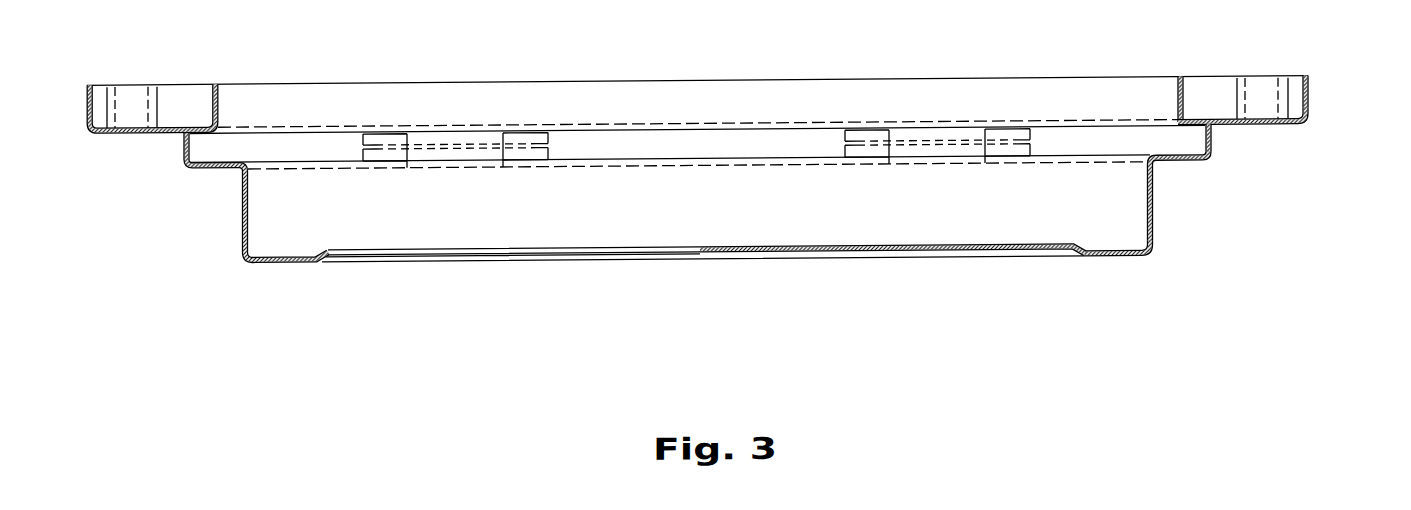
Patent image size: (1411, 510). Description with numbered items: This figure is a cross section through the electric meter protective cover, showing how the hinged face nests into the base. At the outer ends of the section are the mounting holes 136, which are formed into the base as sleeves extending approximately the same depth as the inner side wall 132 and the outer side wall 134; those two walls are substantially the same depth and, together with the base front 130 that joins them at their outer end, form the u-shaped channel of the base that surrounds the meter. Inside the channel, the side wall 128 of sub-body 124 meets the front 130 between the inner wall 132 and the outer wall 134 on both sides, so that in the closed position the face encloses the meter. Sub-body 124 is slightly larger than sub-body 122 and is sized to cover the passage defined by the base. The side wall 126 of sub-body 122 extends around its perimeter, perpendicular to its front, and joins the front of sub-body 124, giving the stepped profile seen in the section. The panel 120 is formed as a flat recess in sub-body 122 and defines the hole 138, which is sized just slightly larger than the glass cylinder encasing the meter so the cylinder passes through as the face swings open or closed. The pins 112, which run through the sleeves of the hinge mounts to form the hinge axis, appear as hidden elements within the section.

The pin 112 is at (503, 149).
The panel 120 is at (880, 259).
The sub-body 122 is at (749, 236).
The sub-body 124 is at (1177, 172).
The side wall 126 is at (1152, 229).
The side wall 128 is at (1213, 153).
The base front 130 is at (1292, 137).
The inner side wall 132 is at (1178, 92).
The outer side wall 134 is at (1308, 106).
The mounting hole 136 is at (740, 100).
The hole 138 is at (517, 262).